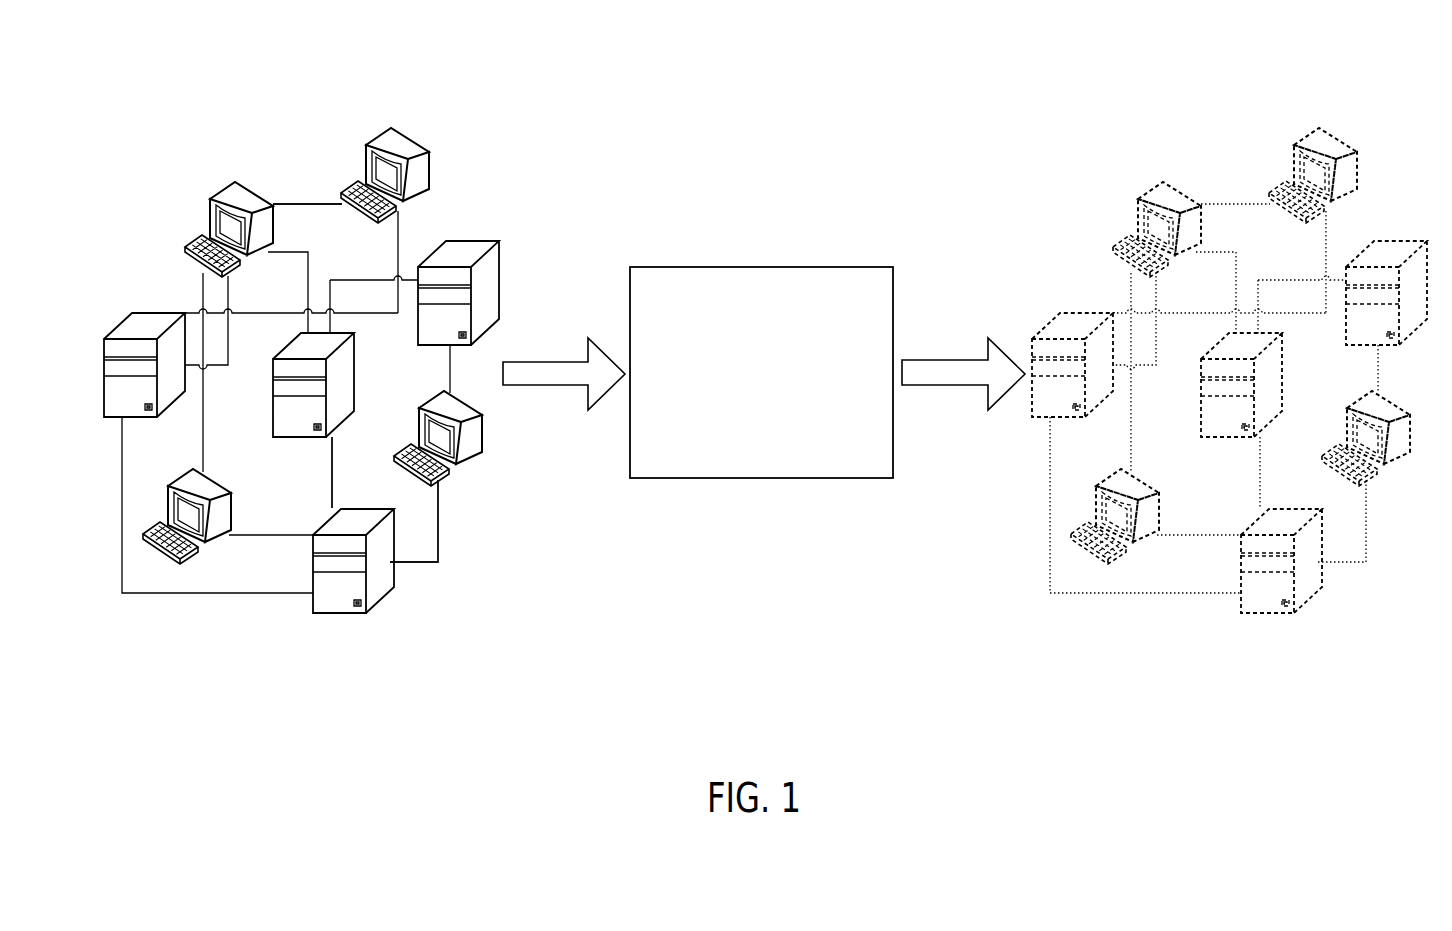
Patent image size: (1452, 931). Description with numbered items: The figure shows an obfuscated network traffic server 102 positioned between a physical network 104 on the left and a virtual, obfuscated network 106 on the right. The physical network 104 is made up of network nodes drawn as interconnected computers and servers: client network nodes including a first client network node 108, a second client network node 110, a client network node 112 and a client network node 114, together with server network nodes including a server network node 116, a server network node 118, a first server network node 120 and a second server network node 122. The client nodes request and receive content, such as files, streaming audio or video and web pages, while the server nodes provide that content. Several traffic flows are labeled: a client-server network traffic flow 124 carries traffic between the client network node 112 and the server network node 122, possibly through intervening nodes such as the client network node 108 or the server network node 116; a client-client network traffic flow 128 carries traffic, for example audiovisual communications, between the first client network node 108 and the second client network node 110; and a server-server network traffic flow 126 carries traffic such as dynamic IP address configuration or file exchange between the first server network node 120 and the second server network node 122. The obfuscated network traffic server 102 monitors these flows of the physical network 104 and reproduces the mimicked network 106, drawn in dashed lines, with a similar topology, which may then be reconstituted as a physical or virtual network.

The obfuscated network traffic server 102 is at (761, 372).
The physical network 104 is at (124, 109).
The obfuscated network 106 is at (1037, 109).
The first client network node 108 is at (211, 199).
The second client network node 110 is at (428, 152).
The client network node 112 is at (483, 430).
The client network node 114 is at (234, 493).
The server network node 116 is at (166, 312).
The server network node 118 is at (496, 265).
The first server network node 120 is at (349, 395).
The second server network node 122 is at (367, 613).
The client-server network traffic flow 124 is at (438, 518).
The server-server network traffic flow 126 is at (333, 463).
The client-client network traffic flow 128 is at (281, 201).